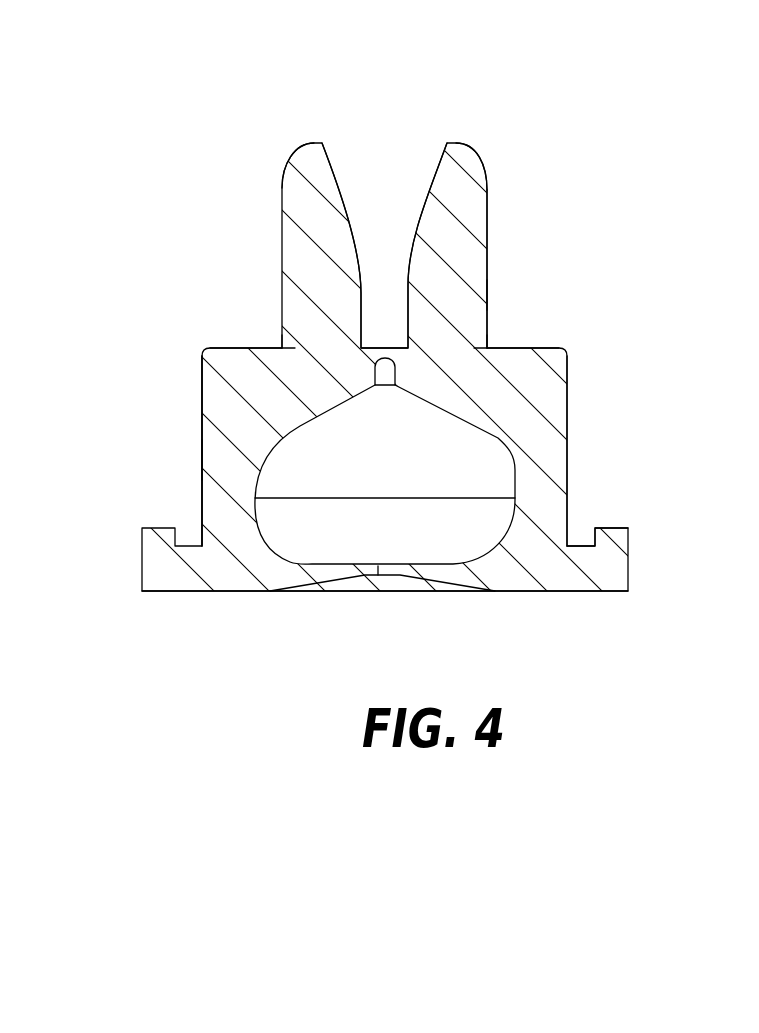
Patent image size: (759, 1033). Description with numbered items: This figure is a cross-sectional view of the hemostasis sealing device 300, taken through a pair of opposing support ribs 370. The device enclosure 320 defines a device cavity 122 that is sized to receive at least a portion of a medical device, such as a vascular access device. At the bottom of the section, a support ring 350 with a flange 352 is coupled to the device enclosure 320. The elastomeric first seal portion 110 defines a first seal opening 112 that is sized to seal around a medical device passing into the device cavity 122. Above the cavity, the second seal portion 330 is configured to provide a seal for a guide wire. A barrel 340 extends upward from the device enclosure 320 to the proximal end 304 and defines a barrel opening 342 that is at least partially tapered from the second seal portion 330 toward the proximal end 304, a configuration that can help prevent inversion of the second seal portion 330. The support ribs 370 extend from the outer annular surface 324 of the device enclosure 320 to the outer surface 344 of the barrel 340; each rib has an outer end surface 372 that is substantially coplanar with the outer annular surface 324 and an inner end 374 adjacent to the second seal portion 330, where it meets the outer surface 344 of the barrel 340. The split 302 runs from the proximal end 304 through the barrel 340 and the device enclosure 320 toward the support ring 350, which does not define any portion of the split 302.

The first seal portion 110 is at (365, 564).
The first seal opening 112 is at (379, 566).
The device cavity 122 is at (440, 475).
The hemostasis sealing device 300 is at (597, 425).
The split 302 is at (384, 356).
The proximal end 304 is at (279, 158).
The device enclosure 320 is at (199, 407).
The outer annular surface 324 is at (202, 462).
The second seal portion 330 is at (362, 356).
The barrel 340 is at (488, 202).
The barrel opening 342 is at (380, 167).
The outer surface of the barrel 344 is at (488, 293).
The support ring 350 is at (607, 567).
The flange 352 is at (623, 540).
The support ribs 370 is at (228, 362).
The outer end surface 372 is at (202, 378).
The inner end 374 is at (280, 345).